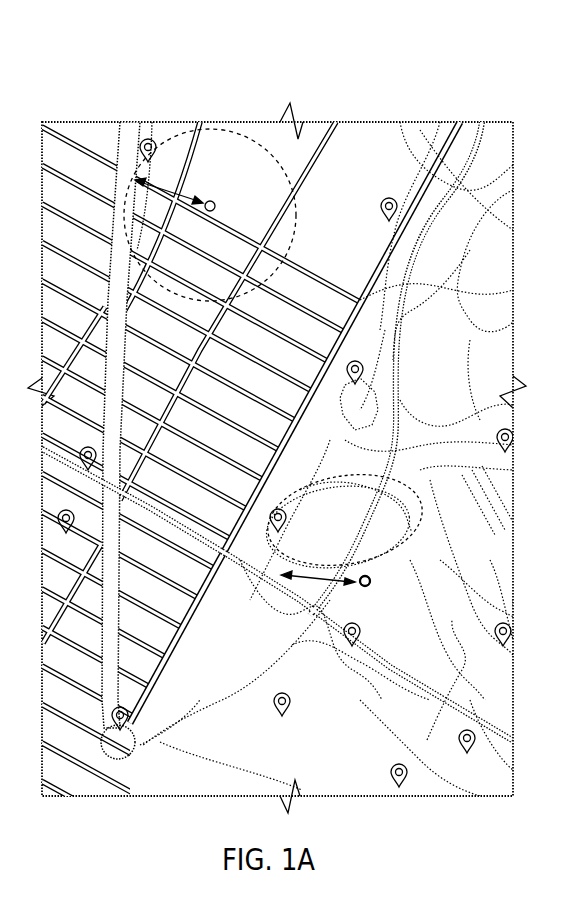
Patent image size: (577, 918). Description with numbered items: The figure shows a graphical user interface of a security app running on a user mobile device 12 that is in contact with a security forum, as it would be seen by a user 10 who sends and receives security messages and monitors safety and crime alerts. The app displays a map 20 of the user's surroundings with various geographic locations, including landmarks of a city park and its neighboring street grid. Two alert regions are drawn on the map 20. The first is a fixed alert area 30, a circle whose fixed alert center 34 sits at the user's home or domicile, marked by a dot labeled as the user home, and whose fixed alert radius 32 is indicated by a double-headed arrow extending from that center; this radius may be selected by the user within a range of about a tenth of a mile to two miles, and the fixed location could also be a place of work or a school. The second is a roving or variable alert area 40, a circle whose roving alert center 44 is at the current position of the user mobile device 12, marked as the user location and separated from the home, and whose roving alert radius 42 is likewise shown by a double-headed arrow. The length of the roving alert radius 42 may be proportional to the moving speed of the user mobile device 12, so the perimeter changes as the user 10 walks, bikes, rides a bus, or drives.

The user 10 is at (441, 589).
The user mobile device 12 is at (453, 589).
The map 20 is at (446, 102).
The fixed alert area 30 is at (296, 121).
The fixed alert radius 32 is at (172, 190).
The fixed alert center 34 is at (211, 213).
The roving alert area 40 is at (393, 497).
The roving alert radius 42 is at (322, 580).
The roving alert center 44 is at (366, 587).